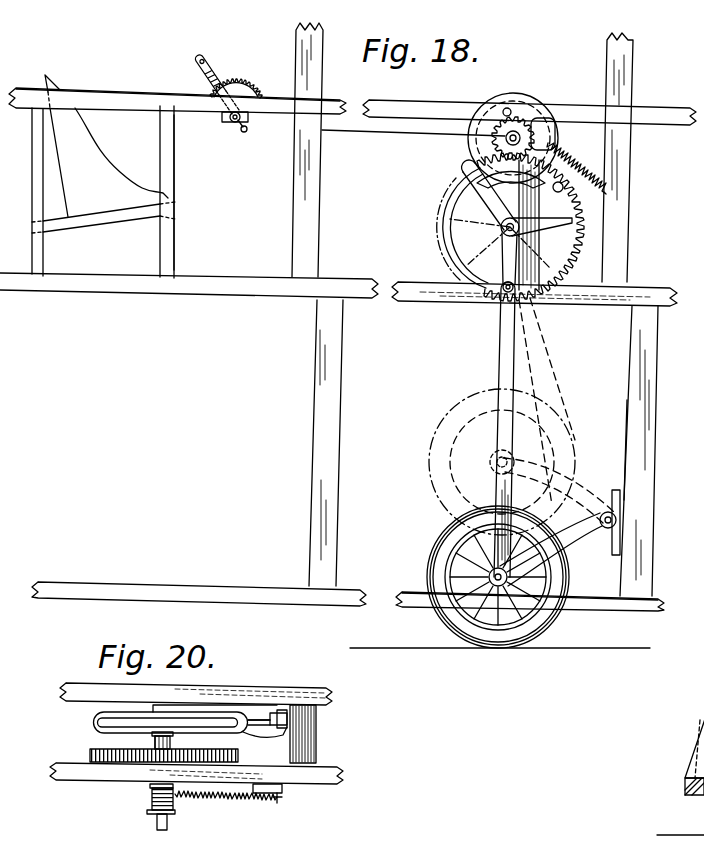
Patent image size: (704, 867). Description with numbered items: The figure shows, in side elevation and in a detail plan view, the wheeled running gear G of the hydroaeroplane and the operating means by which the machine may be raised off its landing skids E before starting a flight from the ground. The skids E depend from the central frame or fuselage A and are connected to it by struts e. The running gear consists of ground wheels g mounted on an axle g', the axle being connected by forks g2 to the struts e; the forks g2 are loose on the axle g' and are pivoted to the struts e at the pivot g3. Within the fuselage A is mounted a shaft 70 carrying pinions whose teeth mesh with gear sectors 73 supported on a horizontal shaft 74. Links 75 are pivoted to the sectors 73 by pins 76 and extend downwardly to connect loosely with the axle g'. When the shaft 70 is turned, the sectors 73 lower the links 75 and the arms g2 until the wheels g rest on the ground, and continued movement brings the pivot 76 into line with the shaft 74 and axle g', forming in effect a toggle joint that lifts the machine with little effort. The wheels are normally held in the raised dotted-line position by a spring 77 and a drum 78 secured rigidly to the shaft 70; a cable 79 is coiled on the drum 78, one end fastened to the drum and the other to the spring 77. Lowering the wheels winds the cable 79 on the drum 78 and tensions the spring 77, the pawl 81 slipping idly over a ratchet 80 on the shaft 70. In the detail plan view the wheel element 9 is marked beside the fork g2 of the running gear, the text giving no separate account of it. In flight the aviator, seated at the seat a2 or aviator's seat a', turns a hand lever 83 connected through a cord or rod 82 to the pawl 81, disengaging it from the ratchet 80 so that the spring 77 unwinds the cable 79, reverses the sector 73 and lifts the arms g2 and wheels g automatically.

In FIG. 20, the fork lever 9 is at (93, 718).
In FIG. 18, the shaft 70 is at (515, 133).
In FIG. 20, the shaft 70 is at (150, 817).
In FIG. 18, the gear sector 73 is at (565, 276).
In FIG. 20, the gear sector 73 is at (240, 758).
In FIG. 18, the horizontal shaft 74 is at (500, 226).
In FIG. 18, the link 75 is at (509, 347).
In FIG. 20, the link 75 is at (163, 744).
In FIG. 18, the pin 76 is at (494, 292).
In FIG. 18, the spring 77 is at (590, 173).
In FIG. 20, the spring 77 is at (253, 797).
In FIG. 20, the drum 78 is at (173, 803).
In FIG. 20, the cable 79 is at (177, 800).
In FIG. 18, the ratchet 80 is at (488, 152).
In FIG. 18, the pawl 81 is at (490, 133).
In FIG. 18, the cord or rod 82 is at (388, 134).
In FIG. 18, the hand lever 83 is at (231, 130).
In FIG. 18, the fuselage A is at (122, 98).
In FIG. 18, the landing skid E is at (245, 593).
In FIG. 18, the wheeled running gear G is at (427, 365).
In FIG. 18, the seat a2 is at (110, 191).
In FIG. 18, the aviator's seat a' is at (219, 192).
In FIG. 18, the strut e is at (650, 450).
In FIG. 18, the ground wheel g is at (498, 587).
In FIG. 18, the axle g' is at (463, 610).
In FIG. 18, the fork g2 is at (600, 556).
In FIG. 20, the fork g2 is at (263, 740).
In FIG. 18, the pivot g3 is at (680, 534).